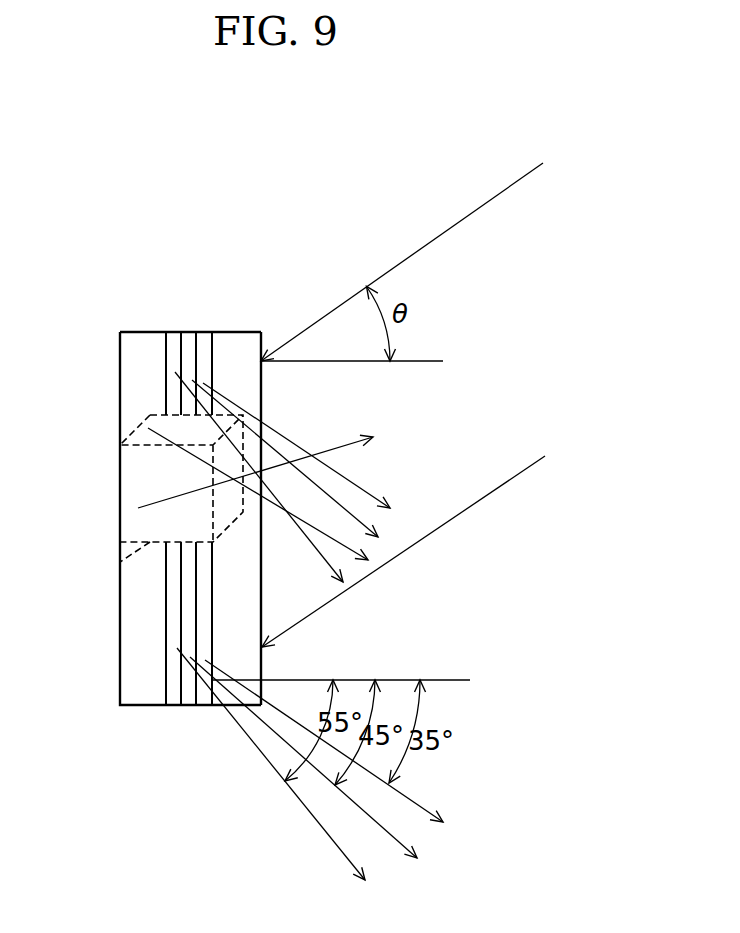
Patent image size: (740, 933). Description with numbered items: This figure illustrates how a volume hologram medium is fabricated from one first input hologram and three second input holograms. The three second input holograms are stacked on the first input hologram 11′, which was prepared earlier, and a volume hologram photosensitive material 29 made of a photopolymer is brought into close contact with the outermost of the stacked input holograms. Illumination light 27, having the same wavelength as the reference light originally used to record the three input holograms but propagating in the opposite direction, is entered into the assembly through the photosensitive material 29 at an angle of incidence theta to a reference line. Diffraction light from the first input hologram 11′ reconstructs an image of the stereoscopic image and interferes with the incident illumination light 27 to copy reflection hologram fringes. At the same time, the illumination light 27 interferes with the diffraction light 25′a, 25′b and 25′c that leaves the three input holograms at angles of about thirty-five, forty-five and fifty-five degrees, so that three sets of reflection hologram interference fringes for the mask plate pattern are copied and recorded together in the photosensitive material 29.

The first input hologram 11′ is at (140, 332).
The volume hologram photosensitive material 29 is at (240, 332).
The illumination light 27 is at (452, 227).
The diffraction light 25′a is at (352, 478).
The diffraction light 25′b is at (360, 513).
The diffraction light 25′c is at (320, 562).